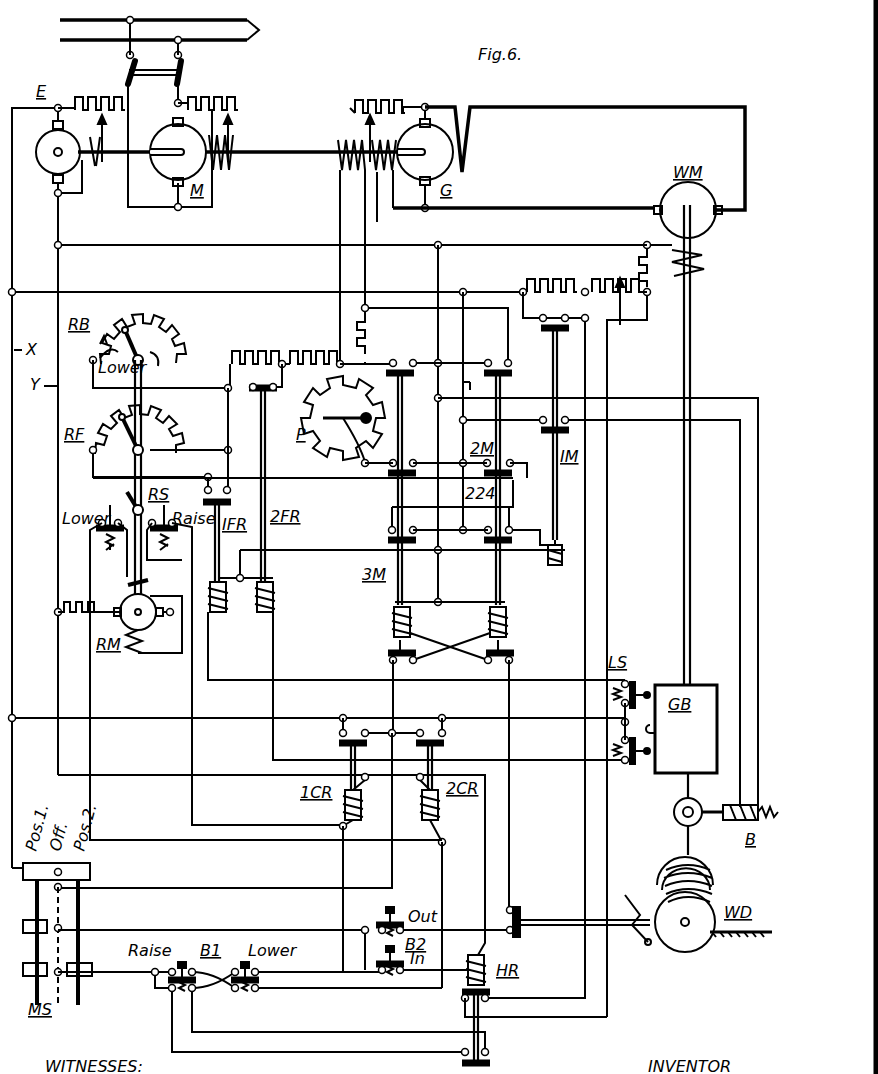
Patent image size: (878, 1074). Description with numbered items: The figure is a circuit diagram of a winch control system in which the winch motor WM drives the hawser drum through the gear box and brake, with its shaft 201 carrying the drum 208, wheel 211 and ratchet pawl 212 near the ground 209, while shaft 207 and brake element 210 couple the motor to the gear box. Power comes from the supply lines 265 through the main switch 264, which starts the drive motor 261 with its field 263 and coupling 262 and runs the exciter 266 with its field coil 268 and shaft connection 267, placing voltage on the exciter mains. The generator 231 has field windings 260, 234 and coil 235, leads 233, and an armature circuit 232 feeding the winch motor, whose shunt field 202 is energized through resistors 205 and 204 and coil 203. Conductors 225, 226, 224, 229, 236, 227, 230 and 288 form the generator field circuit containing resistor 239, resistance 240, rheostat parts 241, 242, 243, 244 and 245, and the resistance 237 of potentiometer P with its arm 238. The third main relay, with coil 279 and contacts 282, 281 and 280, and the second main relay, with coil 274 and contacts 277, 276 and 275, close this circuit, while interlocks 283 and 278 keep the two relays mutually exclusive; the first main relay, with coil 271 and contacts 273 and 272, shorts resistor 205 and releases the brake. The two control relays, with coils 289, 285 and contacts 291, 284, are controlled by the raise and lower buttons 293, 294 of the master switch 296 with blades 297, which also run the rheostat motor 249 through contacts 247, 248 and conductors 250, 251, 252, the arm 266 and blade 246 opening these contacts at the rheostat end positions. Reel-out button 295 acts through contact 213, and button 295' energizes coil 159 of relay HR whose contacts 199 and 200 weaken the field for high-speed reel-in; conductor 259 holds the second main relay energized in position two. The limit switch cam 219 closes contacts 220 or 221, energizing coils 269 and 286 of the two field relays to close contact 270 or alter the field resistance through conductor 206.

The power supply lines 265 is at (175, 30).
The main switch 264 is at (195, 66).
The exciter field coil 268 is at (97, 100).
The motor field coil 263 is at (236, 92).
The shaft coupling coil 262 is at (236, 140).
The motor 261 is at (155, 120).
The arm 266 is at (40, 170).
The shaft connection 267 is at (96, 172).
The generator field winding 260 is at (340, 168).
The generator field winding 234 is at (350, 180).
The field lead 233 is at (380, 215).
The generator field coil 235 is at (392, 98).
The armature circuit 232 is at (472, 152).
The generator 231 is at (445, 172).
The winding motor shaft 201 is at (710, 228).
The shunt field 202 is at (704, 266).
The resistor 203 is at (633, 270).
The resistor 204 is at (619, 301).
The resistor 205 is at (550, 285).
The conductor 225 is at (288, 250).
The conductor 226 is at (180, 292).
The conductor 224 is at (440, 275).
The conductor 229 is at (410, 290).
The conductor 236 is at (372, 336).
The resistance 240 is at (246, 360).
The resistor 239 is at (310, 360).
The resistance element of RB 241 is at (170, 322).
The contact arm of RB 242 is at (145, 354).
The resistor of RF 243 is at (168, 414).
The contact arm of RF 244 is at (118, 450).
The conductor 245 is at (147, 460).
The switch blade 246 is at (122, 494).
The conductor 288 is at (252, 400).
The contact of IFR 270 is at (230, 508).
The conductor 230 is at (336, 480).
The resistance of P 237 is at (322, 392).
The contact arm 238 is at (362, 410).
The contact of 3M 282 is at (402, 352).
The contact of 3M 281 is at (408, 466).
The contact of 3M 280 is at (388, 534).
The contact of 2M 277 is at (495, 365).
The contact of 2M 276 is at (518, 488).
The contact of 2M 275 is at (508, 556).
The conductor 227 is at (482, 386).
The contact of 1M 273 is at (552, 318).
The contact of 1M 272 is at (540, 440).
The coil of 1M 271 is at (545, 557).
The conductor 206 is at (680, 512).
The coil of IFR 269 is at (230, 620).
The coil and contact of 2FR 286 is at (276, 596).
The contact 247 is at (100, 542).
The contact 248 is at (165, 548).
The conductor 250 is at (148, 582).
The rheostat motor armature connection 249 is at (118, 598).
The conductor 251 is at (136, 655).
The coil of 3M 279 is at (392, 616).
The coil of 2M 274 is at (508, 616).
The interlock contact 283 is at (413, 665).
The interlock contact 278 is at (515, 655).
The contact of 1CR 291 is at (340, 745).
The contact of 2CR 284 is at (445, 745).
The coil of 1CR 289 is at (362, 820).
The coil of 2CR 285 is at (438, 812).
The conductor 252 is at (212, 842).
The conductor 259 is at (296, 878).
The master switch contact 296 is at (90, 872).
The master switch blade 297 is at (64, 992).
The raise button 293 is at (160, 992).
The lower button 294 is at (258, 992).
The reel-out button 295 is at (443, 910).
The high-speed reel-in button 295' is at (405, 971).
The contact 213 is at (522, 908).
The coil of HR 159 is at (486, 960).
The contact of HR 199 is at (460, 992).
The contact of HR 200 is at (492, 1062).
The contact of LS 220 is at (640, 672).
The contact of LS 221 is at (640, 768).
The traveling cam 219 is at (657, 729).
The shaft 207 is at (680, 790).
The brake 210 is at (732, 822).
The drum 208 is at (712, 890).
The wheel 211 is at (680, 952).
The ratchet pawl 212 is at (630, 900).
The ground 209 is at (725, 940).